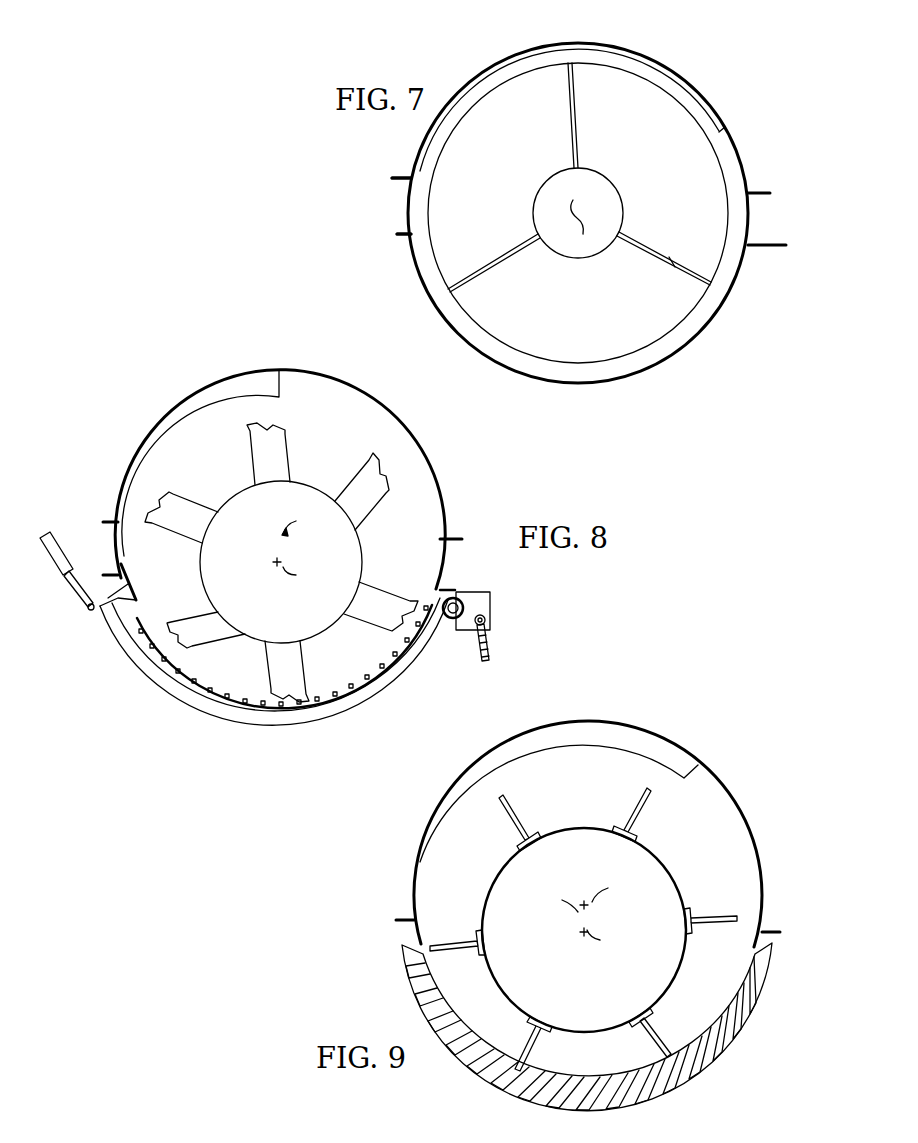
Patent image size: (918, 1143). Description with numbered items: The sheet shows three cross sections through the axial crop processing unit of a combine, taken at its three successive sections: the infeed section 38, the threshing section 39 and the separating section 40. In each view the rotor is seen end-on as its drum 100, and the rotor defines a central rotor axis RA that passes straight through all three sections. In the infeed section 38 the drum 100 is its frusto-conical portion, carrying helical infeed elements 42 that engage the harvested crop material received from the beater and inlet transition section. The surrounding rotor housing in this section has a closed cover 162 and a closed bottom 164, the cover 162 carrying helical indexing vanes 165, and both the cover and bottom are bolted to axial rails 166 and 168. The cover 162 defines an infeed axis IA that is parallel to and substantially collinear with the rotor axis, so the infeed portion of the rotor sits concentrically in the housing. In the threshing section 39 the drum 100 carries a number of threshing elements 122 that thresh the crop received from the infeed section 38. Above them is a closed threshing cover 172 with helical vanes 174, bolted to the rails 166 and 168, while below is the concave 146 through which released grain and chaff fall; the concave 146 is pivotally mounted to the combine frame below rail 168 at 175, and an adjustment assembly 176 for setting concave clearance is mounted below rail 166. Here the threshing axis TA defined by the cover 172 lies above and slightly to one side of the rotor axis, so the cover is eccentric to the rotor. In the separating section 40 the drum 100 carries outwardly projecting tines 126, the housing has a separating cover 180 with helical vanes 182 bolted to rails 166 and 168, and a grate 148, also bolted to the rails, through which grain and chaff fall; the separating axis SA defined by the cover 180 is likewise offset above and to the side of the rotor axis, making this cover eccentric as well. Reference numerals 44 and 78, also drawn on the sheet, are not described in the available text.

In FIG. 7, the infeed section 38 is at (742, 130).
In FIG. 8, the threshing section 39 is at (440, 463).
In FIG. 9, the separating section 40 is at (745, 803).
In FIG. 7, the helical infeed elements 42 is at (497, 187).
In FIG. 9, the vane 44 is at (658, 1040).
In FIG. 8, the latch arm 78 is at (125, 572).
In FIG. 7, the drum 100 is at (575, 258).
In FIG. 8, the drum 100 is at (240, 640).
In FIG. 9, the drum 100 is at (669, 874).
In FIG. 8, the threshing elements 122 is at (372, 482).
In FIG. 9, the tines 126 is at (637, 812).
In FIG. 8, the concave 146 is at (244, 726).
In FIG. 9, the grate 148 is at (543, 1098).
In FIG. 7, the closed cover 162 is at (612, 46).
In FIG. 7, the closed bottom 164 is at (689, 341).
In FIG. 7, the helical indexing vanes 165 is at (694, 104).
In FIG. 7, the axial rail 166 is at (407, 200).
In FIG. 8, the axial rail 166 is at (113, 555).
In FIG. 9, the axial rail 166 is at (402, 920).
In FIG. 8, the axial rail 168 is at (441, 564).
In FIG. 9, the axial rail 168 is at (766, 933).
In FIG. 8, the closed threshing cover 172 is at (309, 370).
In FIG. 8, the helical vanes 174 is at (186, 410).
In FIG. 8, the pivot mounting 175 is at (452, 636).
In FIG. 8, the adjustment assembly 176 is at (74, 615).
In FIG. 9, the separating cover 180 is at (711, 773).
In FIG. 9, the helical vanes 182 is at (657, 744).